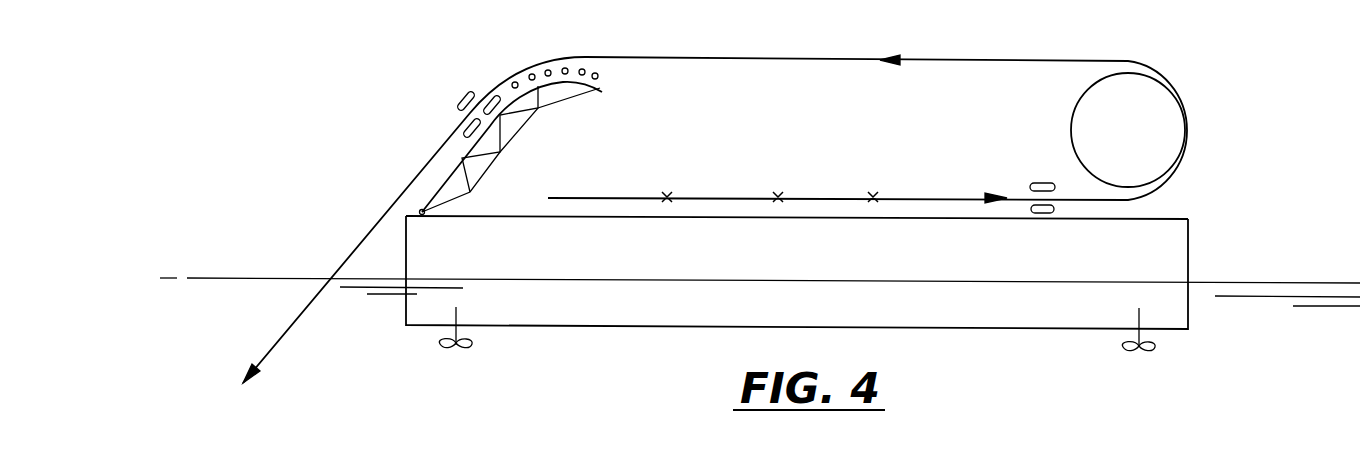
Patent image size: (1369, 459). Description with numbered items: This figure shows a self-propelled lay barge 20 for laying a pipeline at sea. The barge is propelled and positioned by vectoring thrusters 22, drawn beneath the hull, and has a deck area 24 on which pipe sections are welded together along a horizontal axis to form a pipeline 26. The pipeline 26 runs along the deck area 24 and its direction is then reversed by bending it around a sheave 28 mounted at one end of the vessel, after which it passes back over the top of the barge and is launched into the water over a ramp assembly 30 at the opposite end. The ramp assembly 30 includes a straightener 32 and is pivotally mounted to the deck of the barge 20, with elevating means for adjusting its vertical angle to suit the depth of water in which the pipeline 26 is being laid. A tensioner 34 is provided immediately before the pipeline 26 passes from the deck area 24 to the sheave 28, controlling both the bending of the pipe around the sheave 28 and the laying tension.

The self-propelled lay barge 20 is at (859, 263).
The vectoring thrusters 22 is at (462, 348).
The deck area 24 is at (630, 216).
The pipeline 26 is at (777, 60).
The sheave 28 is at (1158, 117).
The ramp assembly 30 is at (518, 153).
The straightener 32 is at (443, 98).
The tensioner 34 is at (1033, 168).